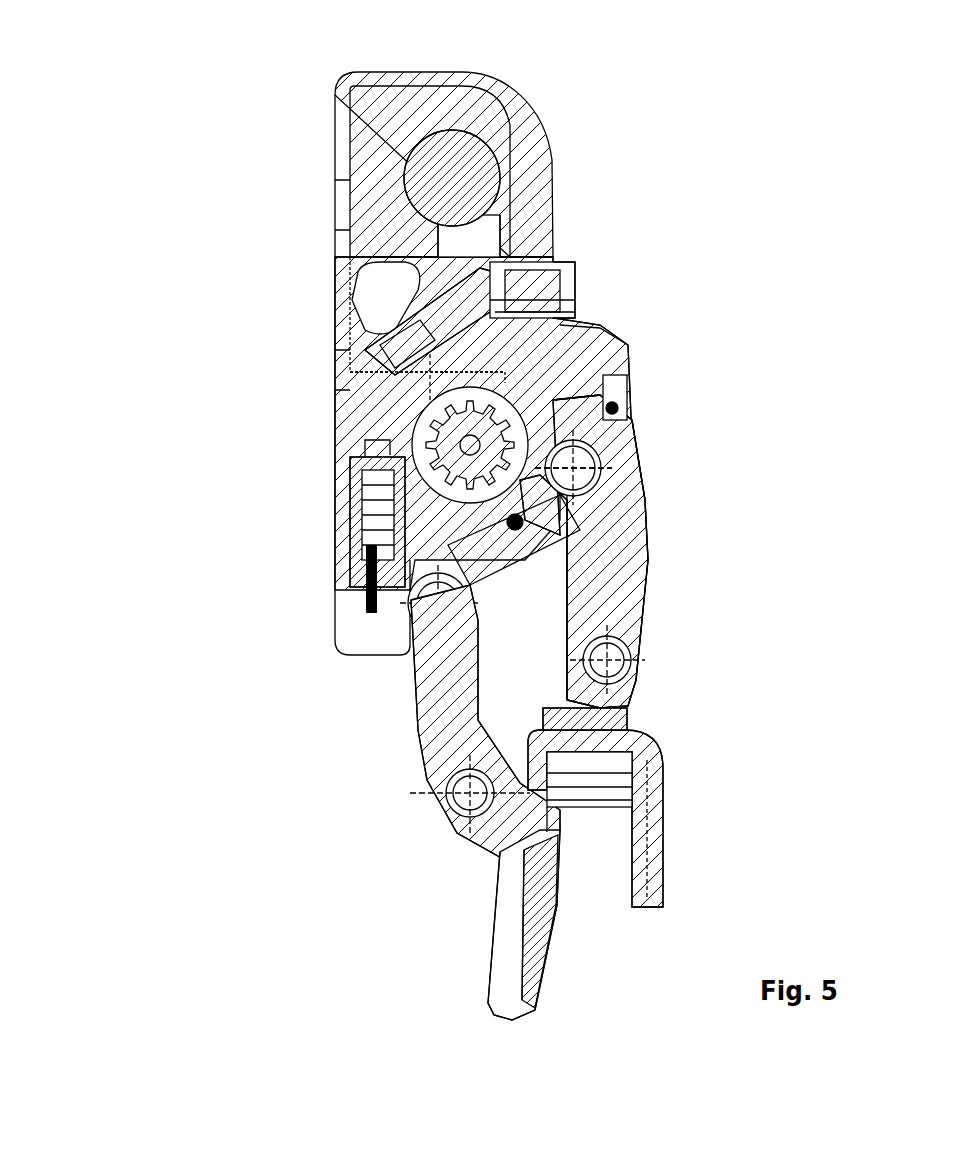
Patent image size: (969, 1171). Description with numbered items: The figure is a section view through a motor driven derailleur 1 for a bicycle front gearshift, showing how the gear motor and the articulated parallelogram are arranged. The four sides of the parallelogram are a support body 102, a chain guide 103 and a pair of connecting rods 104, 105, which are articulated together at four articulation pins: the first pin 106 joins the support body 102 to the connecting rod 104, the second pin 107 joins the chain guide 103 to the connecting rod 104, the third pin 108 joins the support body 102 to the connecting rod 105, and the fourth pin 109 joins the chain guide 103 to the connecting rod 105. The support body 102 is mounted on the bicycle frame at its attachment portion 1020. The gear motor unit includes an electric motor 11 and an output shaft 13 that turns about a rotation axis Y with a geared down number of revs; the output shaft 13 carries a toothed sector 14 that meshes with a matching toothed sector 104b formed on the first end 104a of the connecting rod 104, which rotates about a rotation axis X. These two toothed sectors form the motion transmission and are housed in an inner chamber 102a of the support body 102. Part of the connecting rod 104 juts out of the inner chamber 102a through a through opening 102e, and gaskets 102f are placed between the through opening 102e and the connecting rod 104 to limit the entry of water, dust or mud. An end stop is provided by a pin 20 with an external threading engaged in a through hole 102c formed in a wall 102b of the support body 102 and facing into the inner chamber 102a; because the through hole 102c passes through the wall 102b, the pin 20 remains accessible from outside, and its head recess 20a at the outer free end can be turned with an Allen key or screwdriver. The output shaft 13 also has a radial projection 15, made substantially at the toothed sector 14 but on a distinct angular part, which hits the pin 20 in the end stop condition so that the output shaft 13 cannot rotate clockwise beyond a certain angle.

The derailleur 1 is at (196, 82).
The electric motor 11 is at (466, 165).
The output shaft 13 is at (400, 357).
The toothed sector 14 is at (460, 405).
The radial projection 15 is at (382, 313).
The pin 20 is at (503, 283).
The head recess 20a is at (562, 300).
The support body 102 is at (333, 260).
The inner chamber 102a is at (343, 243).
The wall 102b is at (565, 331).
The through hole 102c is at (567, 267).
The through opening 102e is at (614, 400).
The gaskets 102f is at (522, 516).
The attachment portion 1020 is at (333, 368).
The chain guide 103 is at (665, 812).
The connecting rod 104 is at (637, 540).
The first end 104a is at (613, 453).
The toothed sector 104b is at (540, 405).
The connecting rod 105 is at (432, 694).
The first pin 106 is at (590, 457).
The second pin 107 is at (617, 667).
The third pin 108 is at (430, 608).
The fourth pin 109 is at (466, 800).
The rotation axis X is at (596, 480).
The rotation axis Y is at (430, 375).